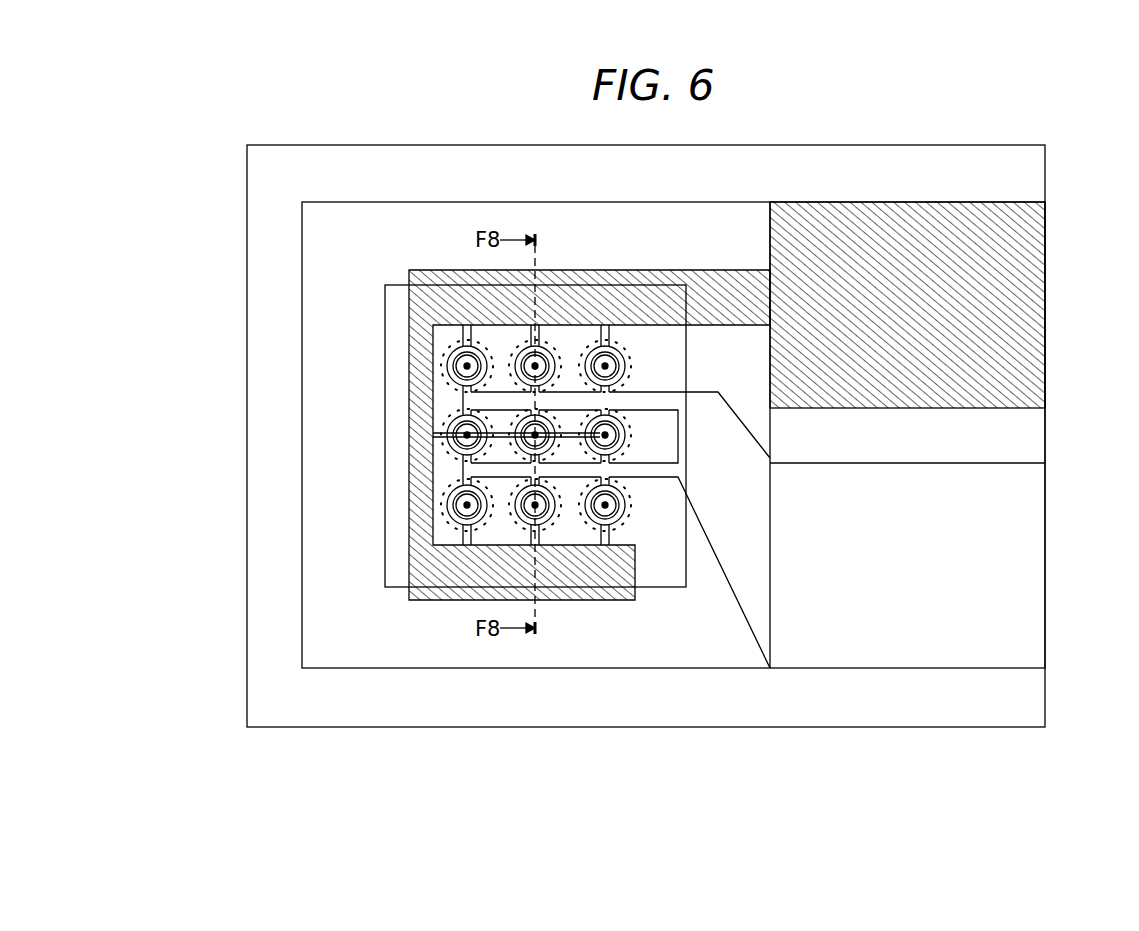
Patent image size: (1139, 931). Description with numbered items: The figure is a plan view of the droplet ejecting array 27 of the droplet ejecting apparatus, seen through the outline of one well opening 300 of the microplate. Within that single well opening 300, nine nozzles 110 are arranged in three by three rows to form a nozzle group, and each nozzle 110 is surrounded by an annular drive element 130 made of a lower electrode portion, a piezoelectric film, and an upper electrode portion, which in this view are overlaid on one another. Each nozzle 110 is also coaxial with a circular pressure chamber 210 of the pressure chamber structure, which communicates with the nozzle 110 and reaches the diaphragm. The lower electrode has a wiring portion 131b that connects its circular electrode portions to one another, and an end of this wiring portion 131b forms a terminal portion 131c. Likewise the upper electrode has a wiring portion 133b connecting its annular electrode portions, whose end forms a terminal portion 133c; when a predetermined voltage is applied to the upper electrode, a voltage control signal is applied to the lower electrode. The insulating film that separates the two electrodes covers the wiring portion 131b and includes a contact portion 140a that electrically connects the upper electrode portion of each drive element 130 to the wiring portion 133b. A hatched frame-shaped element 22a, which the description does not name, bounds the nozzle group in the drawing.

The droplet ejecting array 27 is at (930, 727).
The well opening 300 is at (302, 363).
The terminal portion 133c is at (1030, 296).
The terminal portion 131c is at (1030, 560).
The adhesive frame 22a is at (398, 285).
The wiring portion 131b is at (573, 470).
The wiring portion 133b is at (433, 434).
The contact portion 140a is at (447, 498).
The pressure chamber 210 is at (440, 360).
The nozzle 110 is at (608, 364).
The drive element 130 is at (520, 520).